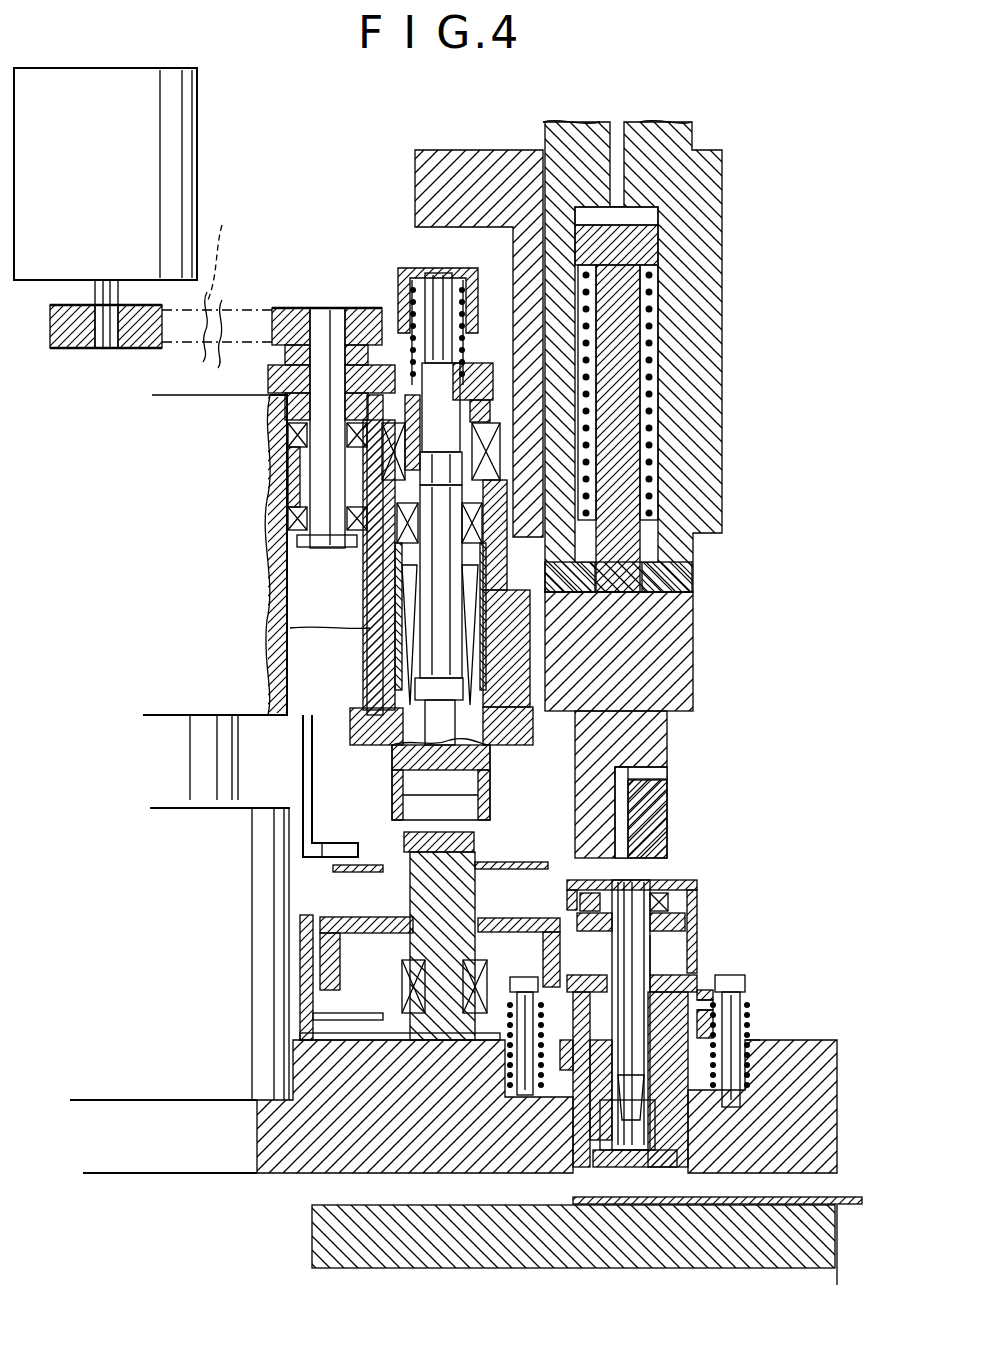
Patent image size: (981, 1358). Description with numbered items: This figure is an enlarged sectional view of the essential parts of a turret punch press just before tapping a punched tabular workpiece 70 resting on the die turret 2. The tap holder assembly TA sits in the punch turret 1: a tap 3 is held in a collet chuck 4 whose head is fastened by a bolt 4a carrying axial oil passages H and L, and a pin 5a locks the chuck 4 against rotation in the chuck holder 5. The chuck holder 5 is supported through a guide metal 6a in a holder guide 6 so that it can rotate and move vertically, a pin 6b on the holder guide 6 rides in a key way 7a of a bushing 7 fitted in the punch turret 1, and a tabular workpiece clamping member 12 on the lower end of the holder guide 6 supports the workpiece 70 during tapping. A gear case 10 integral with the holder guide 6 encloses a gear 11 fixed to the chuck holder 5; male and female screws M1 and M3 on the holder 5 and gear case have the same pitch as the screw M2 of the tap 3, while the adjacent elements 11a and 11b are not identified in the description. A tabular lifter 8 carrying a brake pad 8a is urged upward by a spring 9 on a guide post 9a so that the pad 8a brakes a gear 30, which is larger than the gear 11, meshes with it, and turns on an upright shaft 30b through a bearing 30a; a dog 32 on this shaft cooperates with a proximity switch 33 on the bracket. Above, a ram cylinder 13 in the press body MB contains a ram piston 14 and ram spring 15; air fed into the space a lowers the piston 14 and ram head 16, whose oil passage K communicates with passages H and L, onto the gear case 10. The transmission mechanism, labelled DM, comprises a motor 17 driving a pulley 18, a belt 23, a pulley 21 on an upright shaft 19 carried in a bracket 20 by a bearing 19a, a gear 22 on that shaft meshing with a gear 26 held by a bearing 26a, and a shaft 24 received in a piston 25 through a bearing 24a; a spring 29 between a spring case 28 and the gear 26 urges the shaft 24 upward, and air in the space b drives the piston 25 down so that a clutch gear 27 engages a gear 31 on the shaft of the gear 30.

The punch turret 1 is at (275, 1173).
The die turret 2 is at (595, 1170).
The tap 3 is at (620, 1130).
The collet chuck 4 is at (700, 1115).
The bolt 4a is at (630, 880).
The chuck holder 5 is at (775, 1073).
The pin 5a is at (720, 957).
The holder guide 6 is at (685, 1170).
The guide metal 6a is at (610, 1170).
The pin 6b is at (520, 1130).
The bushing 7 is at (580, 1090).
The key way 7a is at (560, 1100).
The tabular lifter 8 is at (745, 992).
The brake pad 8a is at (540, 980).
The spring 9 is at (745, 1013).
The upright guide post 9a is at (740, 975).
The gear case 10 is at (697, 895).
The gear 11 is at (697, 925).
The housing ring 11a is at (695, 910).
The housing cover 11b is at (675, 880).
The tabular workpiece clamping member 12 is at (660, 1170).
The ram cylinder 13 is at (666, 143).
The ram piston 14 is at (693, 634).
The ram spring 15 is at (710, 460).
The ram head 16 is at (667, 738).
The motor 17 is at (186, 128).
The pulley 18 is at (155, 348).
The upright shaft 19 is at (330, 322).
The bearing 19a is at (290, 437).
The bracket 20 is at (290, 490).
The pulley 21 is at (303, 308).
The gear 22 is at (275, 345).
The belt 23 is at (221, 246).
The shaft 24 is at (430, 585).
The bearing 24a is at (300, 700).
The piston 25 is at (380, 560).
The gear 26 is at (485, 350).
The bearing 26a is at (300, 432).
The clutch gear 27 is at (392, 778).
The spring case 28 is at (405, 268).
The spring 29 is at (467, 273).
The gear 30 is at (335, 918).
The bearing 30a is at (400, 1000).
The upright shaft 30b is at (415, 890).
The gear 31 is at (476, 838).
The dog 32 is at (333, 870).
The proximity switch 33 is at (325, 850).
The tabular workpiece 70 is at (848, 1197).
The space a is at (658, 213).
The space b is at (290, 628).
The oil passage H is at (745, 1040).
The oil passage K is at (660, 780).
The oil passage L is at (690, 900).
The male screw M1 is at (695, 943).
The screw M2 is at (640, 1170).
The female screw M3 is at (580, 935).
The press body MB is at (258, 392).
The drive mechanism DM is at (335, 250).
The tap holder assembly TA is at (567, 875).